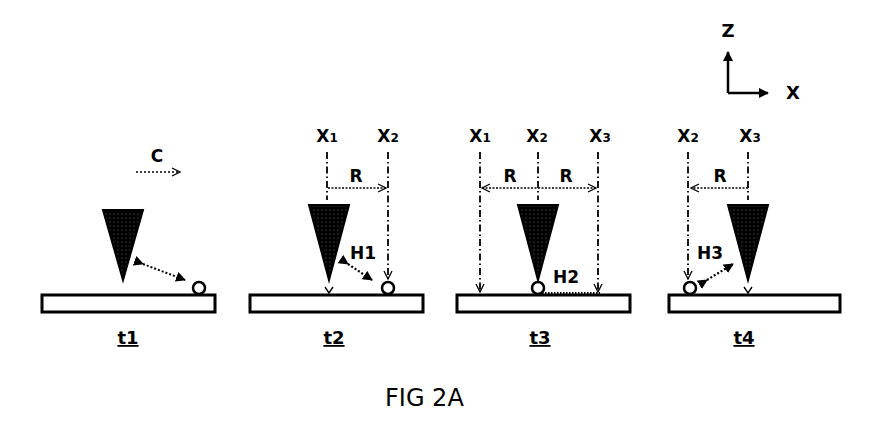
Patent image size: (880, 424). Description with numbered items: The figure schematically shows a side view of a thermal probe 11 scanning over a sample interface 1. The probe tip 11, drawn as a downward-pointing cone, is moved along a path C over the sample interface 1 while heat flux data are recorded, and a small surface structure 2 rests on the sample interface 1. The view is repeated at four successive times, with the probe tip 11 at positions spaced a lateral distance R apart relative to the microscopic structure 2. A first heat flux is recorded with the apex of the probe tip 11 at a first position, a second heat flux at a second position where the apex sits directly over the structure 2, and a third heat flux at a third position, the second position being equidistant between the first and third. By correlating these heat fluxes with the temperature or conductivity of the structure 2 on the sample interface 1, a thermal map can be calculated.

The sample interface 1 is at (56, 292).
The surface structure 2 is at (200, 279).
The thermal probe 11 is at (94, 232).